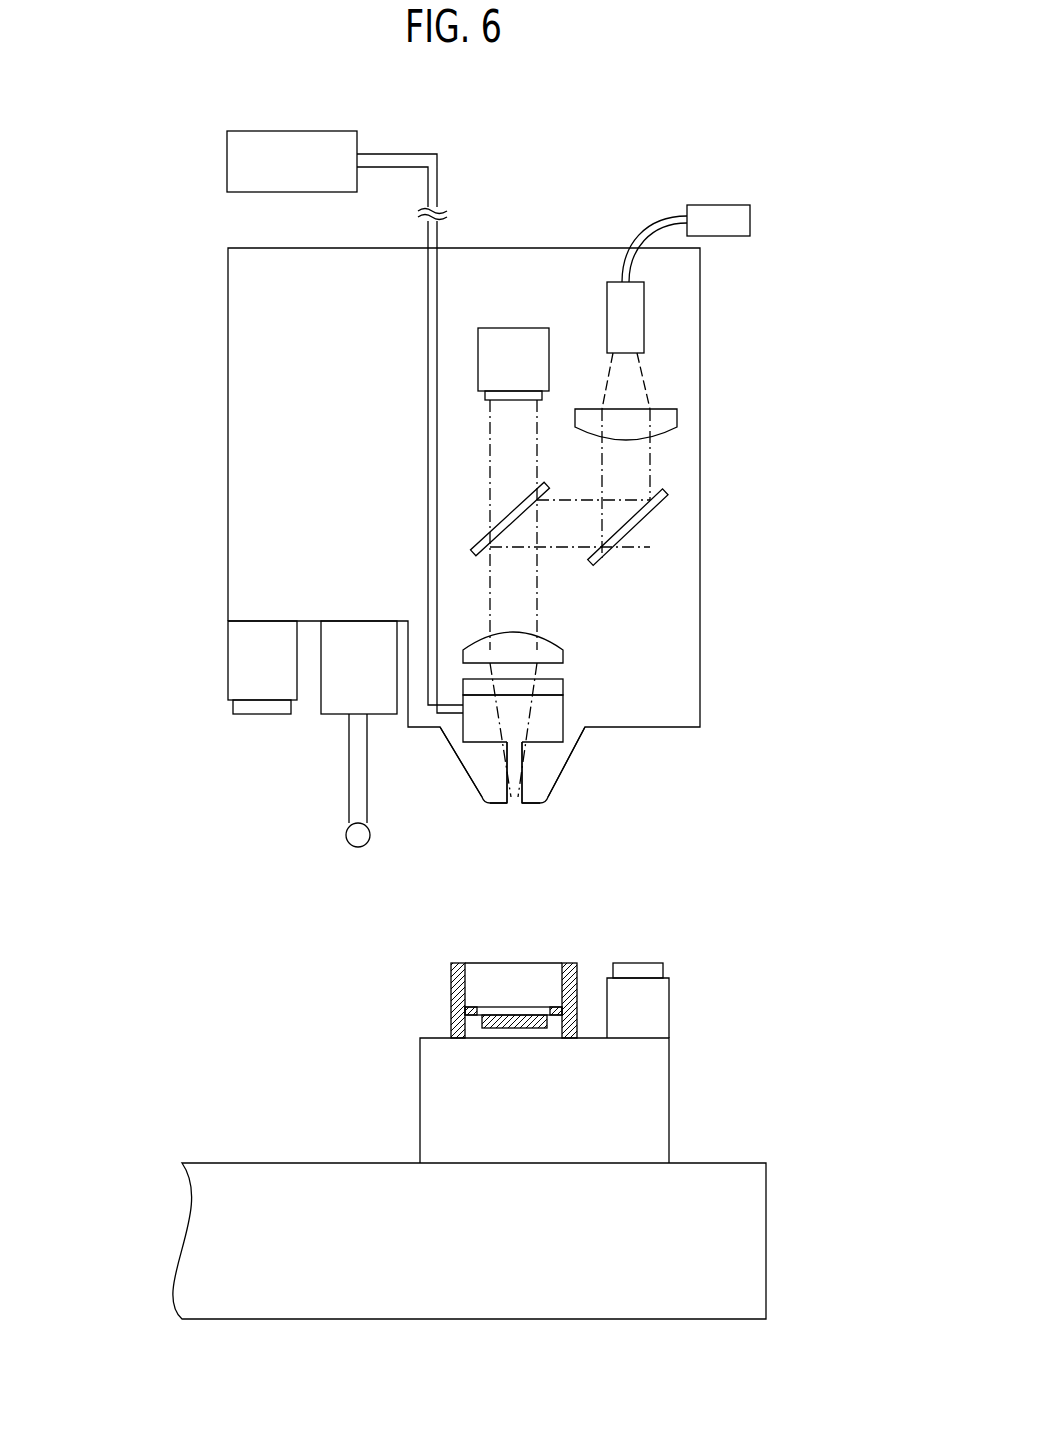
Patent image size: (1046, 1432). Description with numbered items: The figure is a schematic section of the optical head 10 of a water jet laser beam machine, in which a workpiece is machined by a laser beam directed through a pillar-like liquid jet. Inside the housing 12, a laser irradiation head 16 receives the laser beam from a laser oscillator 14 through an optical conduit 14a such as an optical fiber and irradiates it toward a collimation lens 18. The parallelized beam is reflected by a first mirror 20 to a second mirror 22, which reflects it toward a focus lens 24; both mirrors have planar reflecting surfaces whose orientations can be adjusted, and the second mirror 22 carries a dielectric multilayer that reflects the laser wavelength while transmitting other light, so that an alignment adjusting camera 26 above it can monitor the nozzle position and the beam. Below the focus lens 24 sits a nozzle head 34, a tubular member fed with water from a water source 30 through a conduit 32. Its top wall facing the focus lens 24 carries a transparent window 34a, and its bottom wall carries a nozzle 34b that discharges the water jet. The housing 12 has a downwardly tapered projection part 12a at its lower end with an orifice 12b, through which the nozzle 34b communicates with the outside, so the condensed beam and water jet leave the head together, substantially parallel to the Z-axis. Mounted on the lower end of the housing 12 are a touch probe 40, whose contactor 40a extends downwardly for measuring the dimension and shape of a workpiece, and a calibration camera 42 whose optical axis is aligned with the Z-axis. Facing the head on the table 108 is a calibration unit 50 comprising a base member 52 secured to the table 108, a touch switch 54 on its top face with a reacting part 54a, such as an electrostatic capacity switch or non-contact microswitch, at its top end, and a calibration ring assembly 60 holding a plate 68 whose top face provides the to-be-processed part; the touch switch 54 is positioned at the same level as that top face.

The optical head 10 is at (561, 172).
The housing 12 is at (228, 288).
The projection part 12a is at (540, 768).
The orifice 12b is at (512, 797).
The laser oscillator 14 is at (708, 205).
The optical conduit 14a is at (663, 218).
The laser irradiation head 16 is at (644, 326).
The collimation lens 18 is at (677, 420).
The first mirror 20 is at (648, 520).
The second mirror 22 is at (512, 516).
The focus lens 24 is at (563, 651).
The alignment adjusting camera 26 is at (522, 336).
The water source 30 is at (260, 131).
The water supply pipe 32 is at (378, 153).
The nozzle head 34 is at (563, 707).
The window 34a is at (563, 681).
The nozzle 34b is at (513, 760).
The touch probe 40 is at (335, 702).
The contactor 40a is at (346, 835).
The calibration camera 42 is at (228, 660).
The calibration unit 50 is at (684, 914).
The base member 52 is at (655, 1095).
The touch switch 54 is at (657, 1013).
The reacting part 54a is at (642, 968).
The calibration ring assembly 60 is at (432, 972).
The plate 68 is at (513, 1032).
The table 108 is at (288, 1185).